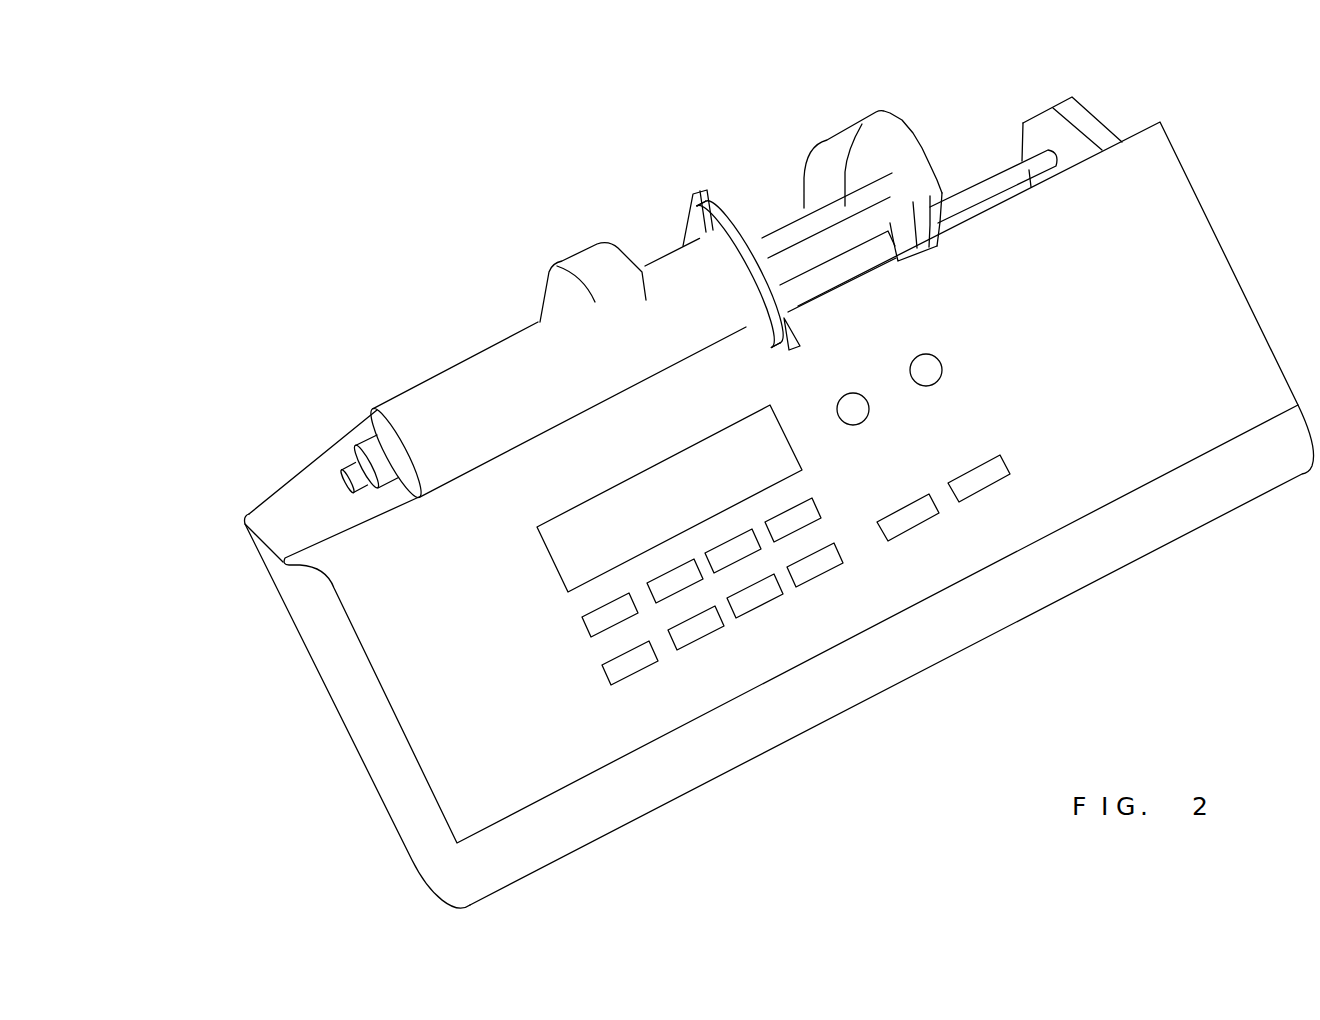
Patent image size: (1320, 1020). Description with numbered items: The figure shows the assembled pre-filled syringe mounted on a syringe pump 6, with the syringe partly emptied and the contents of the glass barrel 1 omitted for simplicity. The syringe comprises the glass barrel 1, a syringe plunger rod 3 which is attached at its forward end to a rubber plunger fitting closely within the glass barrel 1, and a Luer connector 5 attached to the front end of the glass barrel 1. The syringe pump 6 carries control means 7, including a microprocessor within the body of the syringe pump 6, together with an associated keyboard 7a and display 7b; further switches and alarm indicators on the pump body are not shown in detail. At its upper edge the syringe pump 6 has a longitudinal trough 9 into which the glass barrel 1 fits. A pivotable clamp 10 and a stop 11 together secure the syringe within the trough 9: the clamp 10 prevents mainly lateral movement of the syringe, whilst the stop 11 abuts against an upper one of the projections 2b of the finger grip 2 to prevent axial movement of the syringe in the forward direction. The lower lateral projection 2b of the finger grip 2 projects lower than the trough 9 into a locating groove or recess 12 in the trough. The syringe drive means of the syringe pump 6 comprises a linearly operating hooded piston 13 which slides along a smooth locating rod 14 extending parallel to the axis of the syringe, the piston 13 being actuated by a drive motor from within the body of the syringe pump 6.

The glass barrel 1 is at (461, 361).
The finger grip 2 is at (768, 277).
The projections of the finger grip 2b is at (722, 197).
The syringe plunger rod 3 is at (799, 225).
The Luer connector 5 is at (367, 457).
The syringe pump 6 is at (1131, 360).
The control means 7 is at (642, 604).
The keyboard 7a is at (693, 623).
The display 7b is at (558, 543).
The longitudinal trough 9 is at (283, 532).
The pivotable clamp 10 is at (590, 272).
The stop 11 is at (695, 230).
The locating groove or recess 12 is at (782, 347).
The hooded piston 13 is at (855, 132).
The locating rod 14 is at (971, 186).